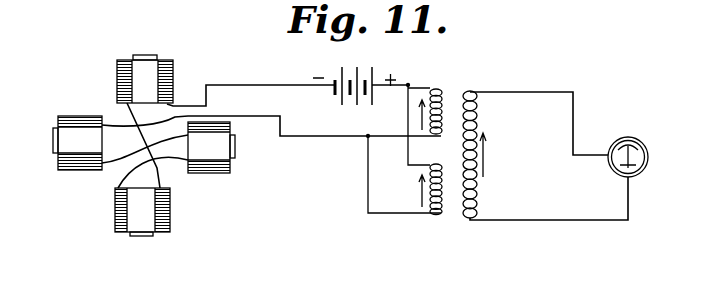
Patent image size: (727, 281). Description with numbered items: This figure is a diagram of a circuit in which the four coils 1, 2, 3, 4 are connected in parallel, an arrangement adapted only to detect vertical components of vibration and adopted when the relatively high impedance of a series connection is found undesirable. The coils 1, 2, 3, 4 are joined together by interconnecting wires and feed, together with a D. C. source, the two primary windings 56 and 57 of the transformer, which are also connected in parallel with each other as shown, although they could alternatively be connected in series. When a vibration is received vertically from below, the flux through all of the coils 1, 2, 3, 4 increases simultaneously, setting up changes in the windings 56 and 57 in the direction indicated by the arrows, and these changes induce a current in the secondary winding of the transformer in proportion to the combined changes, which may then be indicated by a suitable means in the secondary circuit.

The coil 1 is at (142, 212).
The coil 2 is at (77, 143).
The coil 3 is at (211, 147).
The coil 4 is at (145, 79).
The winding 56 is at (420, 93).
The winding 57 is at (420, 167).